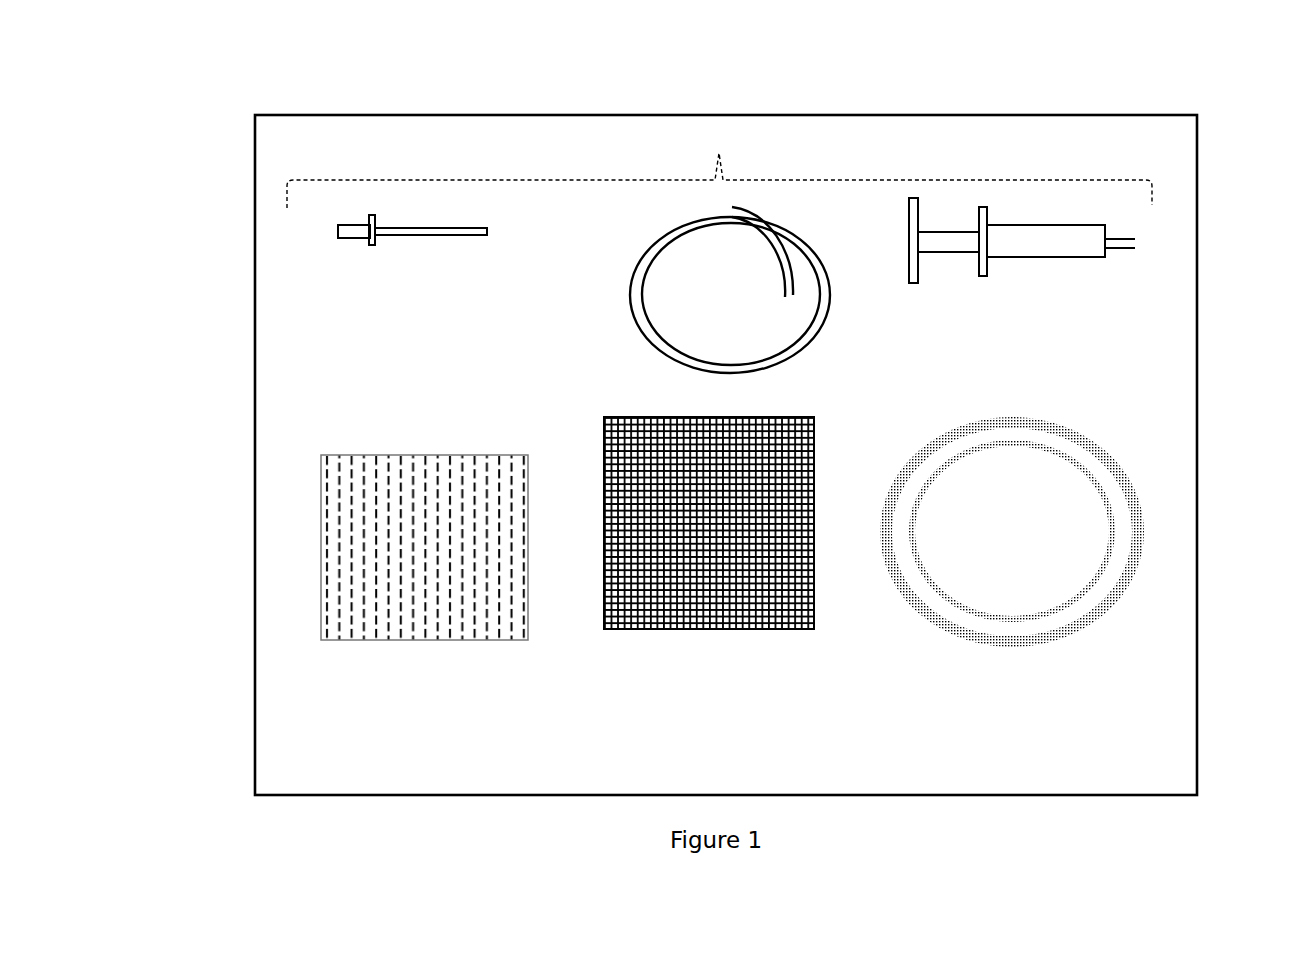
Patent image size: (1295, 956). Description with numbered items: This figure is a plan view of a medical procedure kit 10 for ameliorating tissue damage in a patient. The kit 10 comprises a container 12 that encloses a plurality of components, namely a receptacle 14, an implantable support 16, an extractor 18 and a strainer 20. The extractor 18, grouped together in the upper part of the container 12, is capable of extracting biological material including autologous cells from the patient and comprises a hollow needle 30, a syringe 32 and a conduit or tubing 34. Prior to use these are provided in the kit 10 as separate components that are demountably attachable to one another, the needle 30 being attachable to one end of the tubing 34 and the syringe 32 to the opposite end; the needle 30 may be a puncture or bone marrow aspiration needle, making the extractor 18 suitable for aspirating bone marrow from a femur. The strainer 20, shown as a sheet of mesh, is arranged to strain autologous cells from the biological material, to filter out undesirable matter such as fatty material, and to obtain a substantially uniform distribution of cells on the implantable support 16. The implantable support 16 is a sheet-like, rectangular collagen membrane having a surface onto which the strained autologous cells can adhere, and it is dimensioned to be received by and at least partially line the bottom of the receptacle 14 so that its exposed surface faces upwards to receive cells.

The medical procedure kit 10 is at (192, 109).
The container 12 is at (1198, 278).
The receptacle 14 is at (1012, 645).
The implantable support 16 is at (427, 640).
The extractor 18 is at (757, 158).
The strainer 20 is at (715, 629).
The hollow needle 30 is at (408, 233).
The syringe 32 is at (1023, 257).
The tubing 34 is at (830, 298).